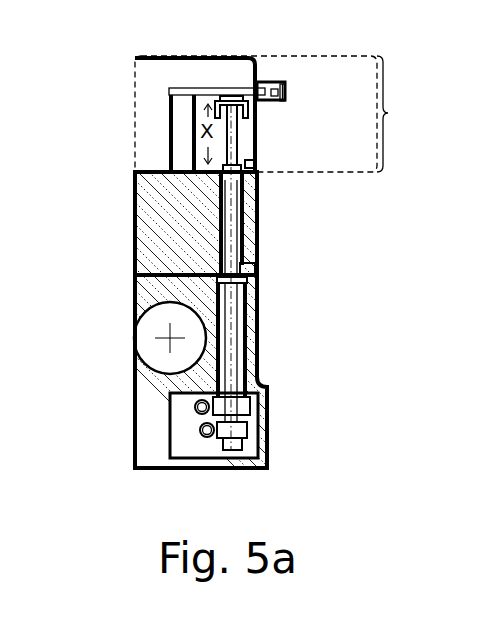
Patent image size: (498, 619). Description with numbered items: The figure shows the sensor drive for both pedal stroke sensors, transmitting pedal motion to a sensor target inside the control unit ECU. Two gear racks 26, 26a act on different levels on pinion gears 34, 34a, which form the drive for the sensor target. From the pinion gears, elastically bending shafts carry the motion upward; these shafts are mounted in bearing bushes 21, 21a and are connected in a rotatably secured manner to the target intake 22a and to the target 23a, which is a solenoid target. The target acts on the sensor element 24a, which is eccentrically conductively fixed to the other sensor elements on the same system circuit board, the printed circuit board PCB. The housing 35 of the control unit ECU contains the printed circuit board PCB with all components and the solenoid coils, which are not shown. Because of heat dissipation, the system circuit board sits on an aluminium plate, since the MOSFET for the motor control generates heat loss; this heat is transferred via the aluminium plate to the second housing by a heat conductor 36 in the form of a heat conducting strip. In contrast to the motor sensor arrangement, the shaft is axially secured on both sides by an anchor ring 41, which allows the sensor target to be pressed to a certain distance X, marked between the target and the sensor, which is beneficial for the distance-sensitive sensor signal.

The ECU housing 35 is at (221, 66).
The printed circuit board PCB is at (178, 88).
The sensor element 24a is at (238, 96).
The heat conductor 36 is at (182, 108).
The target (solenoid) 23a is at (250, 106).
The target intake 22a is at (250, 124).
The control unit ECU is at (287, 114).
The anchor ring 41 is at (150, 178).
The bearing bush 21a is at (243, 183).
The bearing bush 21 is at (256, 263).
The gear rack 1 26 is at (200, 408).
The gearwheel 1 34 is at (250, 403).
The gear rack 2 26a is at (205, 432).
The gearwheel 2 34a is at (247, 433).